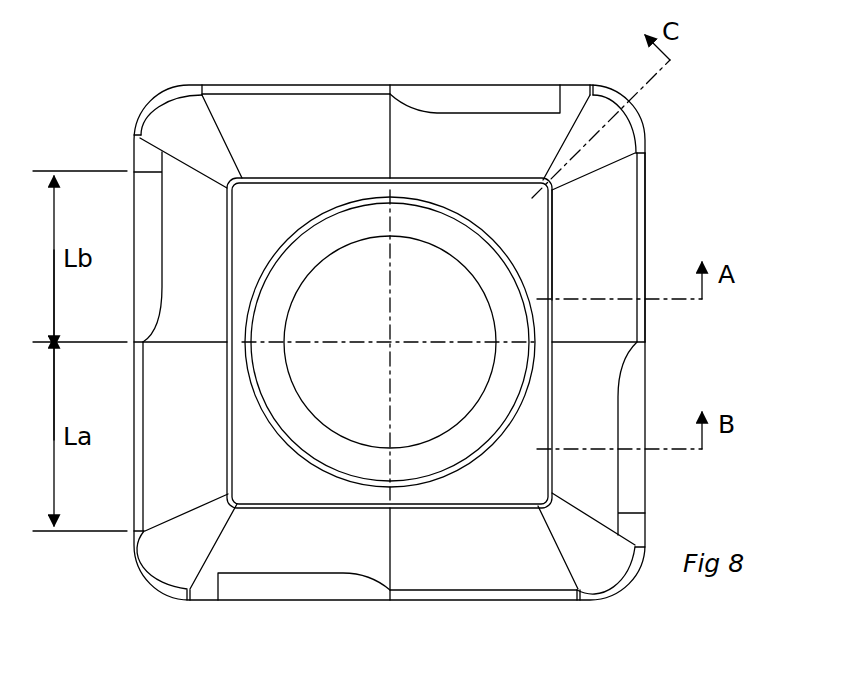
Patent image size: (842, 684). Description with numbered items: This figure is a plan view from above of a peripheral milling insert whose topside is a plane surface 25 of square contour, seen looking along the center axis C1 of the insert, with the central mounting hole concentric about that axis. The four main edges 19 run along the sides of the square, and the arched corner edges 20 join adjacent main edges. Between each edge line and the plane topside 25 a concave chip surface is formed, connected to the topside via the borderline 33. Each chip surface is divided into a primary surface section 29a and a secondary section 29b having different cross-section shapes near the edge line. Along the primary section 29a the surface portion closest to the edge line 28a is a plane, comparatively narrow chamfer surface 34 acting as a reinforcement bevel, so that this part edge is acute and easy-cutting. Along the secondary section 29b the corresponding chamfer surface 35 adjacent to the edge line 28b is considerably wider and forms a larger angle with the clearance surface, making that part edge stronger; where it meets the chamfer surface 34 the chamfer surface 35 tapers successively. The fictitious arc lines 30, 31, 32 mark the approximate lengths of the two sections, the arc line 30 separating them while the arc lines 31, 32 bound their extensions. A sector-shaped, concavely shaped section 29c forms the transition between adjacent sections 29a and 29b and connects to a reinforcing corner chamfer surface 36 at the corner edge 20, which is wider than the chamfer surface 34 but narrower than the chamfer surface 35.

The main edge 19 is at (303, 72).
The corner edge 20 is at (148, 98).
The plane surface 25 is at (390, 342).
The edge line 28a is at (645, 265).
The edge line 28b is at (645, 420).
The primary surface section 29a is at (423, 343).
The secondary section 29b is at (475, 121).
The sector-shaped concave section 29c is at (617, 142).
The arc line 30 is at (173, 345).
The arc line 31 is at (170, 515).
The arc line 32 is at (183, 168).
The borderline 33 is at (550, 245).
The chamfer surface 34 is at (642, 215).
The chamfer surface 35 is at (520, 97).
The corner chamfer surface 36 is at (638, 118).
The center axis C1 is at (390, 343).